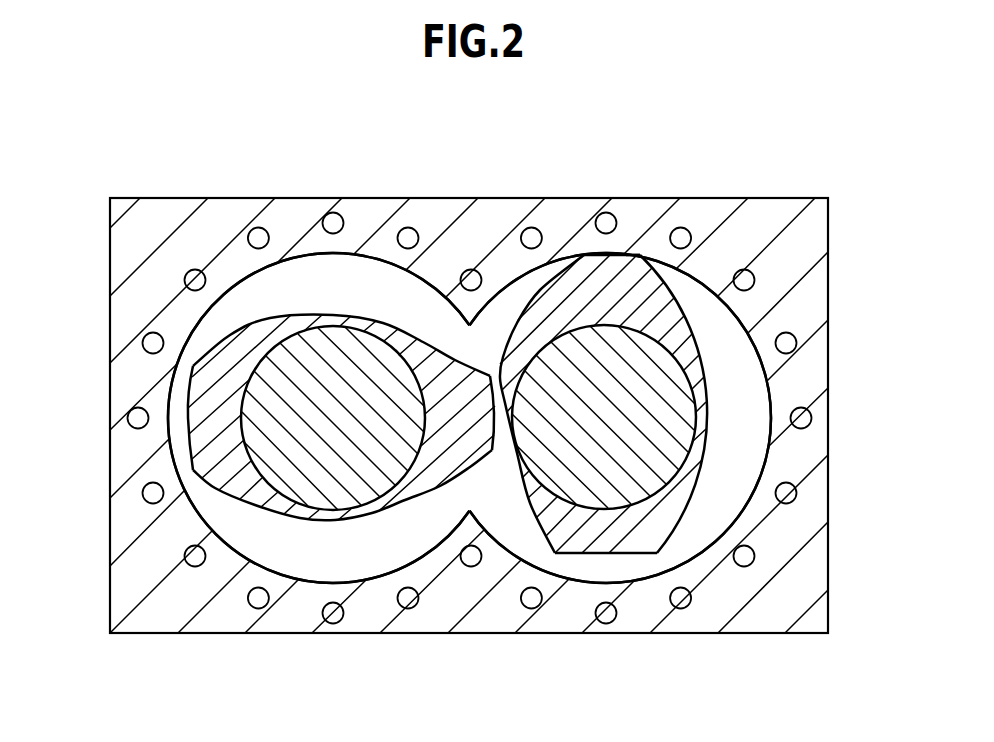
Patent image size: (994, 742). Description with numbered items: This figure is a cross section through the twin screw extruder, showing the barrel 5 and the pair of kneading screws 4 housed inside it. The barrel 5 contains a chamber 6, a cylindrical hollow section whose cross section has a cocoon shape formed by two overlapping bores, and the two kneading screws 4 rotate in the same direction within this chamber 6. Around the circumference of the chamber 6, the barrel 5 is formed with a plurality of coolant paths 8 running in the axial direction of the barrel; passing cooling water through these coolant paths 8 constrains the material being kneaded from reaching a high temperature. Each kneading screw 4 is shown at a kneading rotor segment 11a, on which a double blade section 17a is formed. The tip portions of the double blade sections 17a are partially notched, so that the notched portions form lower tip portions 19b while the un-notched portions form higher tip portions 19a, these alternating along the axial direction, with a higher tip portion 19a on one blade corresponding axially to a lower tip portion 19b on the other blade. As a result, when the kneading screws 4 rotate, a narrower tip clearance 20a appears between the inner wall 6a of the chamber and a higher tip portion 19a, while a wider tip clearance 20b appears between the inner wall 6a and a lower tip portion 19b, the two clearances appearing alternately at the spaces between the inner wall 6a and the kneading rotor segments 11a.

The kneading screws 4 is at (470, 423).
The barrel 5 is at (810, 352).
The chamber 6 is at (752, 448).
The inner wall of the chamber 6a is at (220, 302).
The coolant paths 8 is at (190, 550).
The kneading rotor segment 11a is at (680, 306).
The double blade section 17a is at (212, 420).
The higher tip portion 19a is at (503, 400).
The lower tip portion 19b is at (191, 407).
The narrower tip clearance 20a is at (641, 255).
The wider tip clearance 20b is at (183, 455).